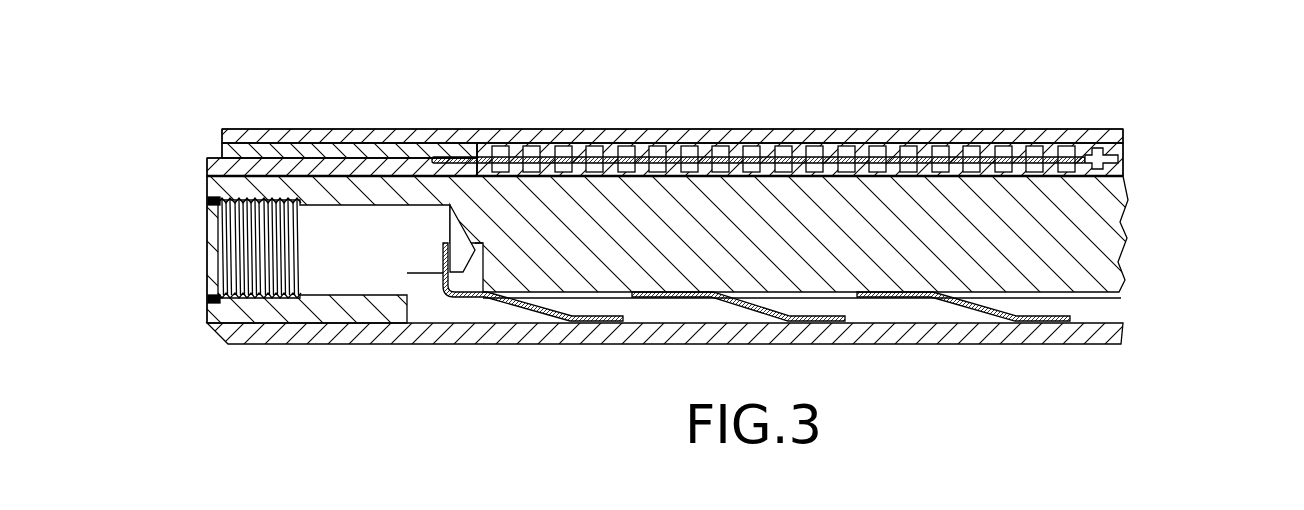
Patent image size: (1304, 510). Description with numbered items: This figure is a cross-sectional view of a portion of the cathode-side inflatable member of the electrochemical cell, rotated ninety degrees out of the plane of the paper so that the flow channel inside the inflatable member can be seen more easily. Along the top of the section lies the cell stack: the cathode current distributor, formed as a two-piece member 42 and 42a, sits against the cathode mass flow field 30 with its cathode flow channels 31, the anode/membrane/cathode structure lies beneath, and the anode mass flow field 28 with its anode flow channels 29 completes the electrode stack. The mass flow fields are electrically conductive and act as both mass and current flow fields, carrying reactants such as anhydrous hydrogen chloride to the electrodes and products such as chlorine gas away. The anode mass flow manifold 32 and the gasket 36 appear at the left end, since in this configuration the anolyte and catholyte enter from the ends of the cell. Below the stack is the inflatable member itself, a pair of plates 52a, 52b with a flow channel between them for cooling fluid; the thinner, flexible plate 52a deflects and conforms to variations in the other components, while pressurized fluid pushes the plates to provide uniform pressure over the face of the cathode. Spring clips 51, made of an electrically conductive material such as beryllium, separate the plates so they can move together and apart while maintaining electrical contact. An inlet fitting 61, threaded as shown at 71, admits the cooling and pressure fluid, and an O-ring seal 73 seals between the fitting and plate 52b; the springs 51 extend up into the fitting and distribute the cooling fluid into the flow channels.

The anode mass flow manifold 32 is at (217, 160).
The O-ring seal 73 is at (222, 197).
The gasket 36 is at (273, 200).
The threads 71 is at (303, 200).
The cathode current distributor piece 42a is at (398, 150).
The cathode current distributor 42 is at (437, 135).
The inlet fitting 61 is at (497, 153).
The cathode flow channels 31 is at (688, 150).
The anode flow channels 29 is at (1063, 143).
The cathode mass flow field 30 is at (1123, 145).
The anode mass flow field 28 is at (1123, 168).
The plate 52b is at (1095, 265).
The spring clips 51 is at (1123, 297).
The flexible plate 52a is at (1123, 333).